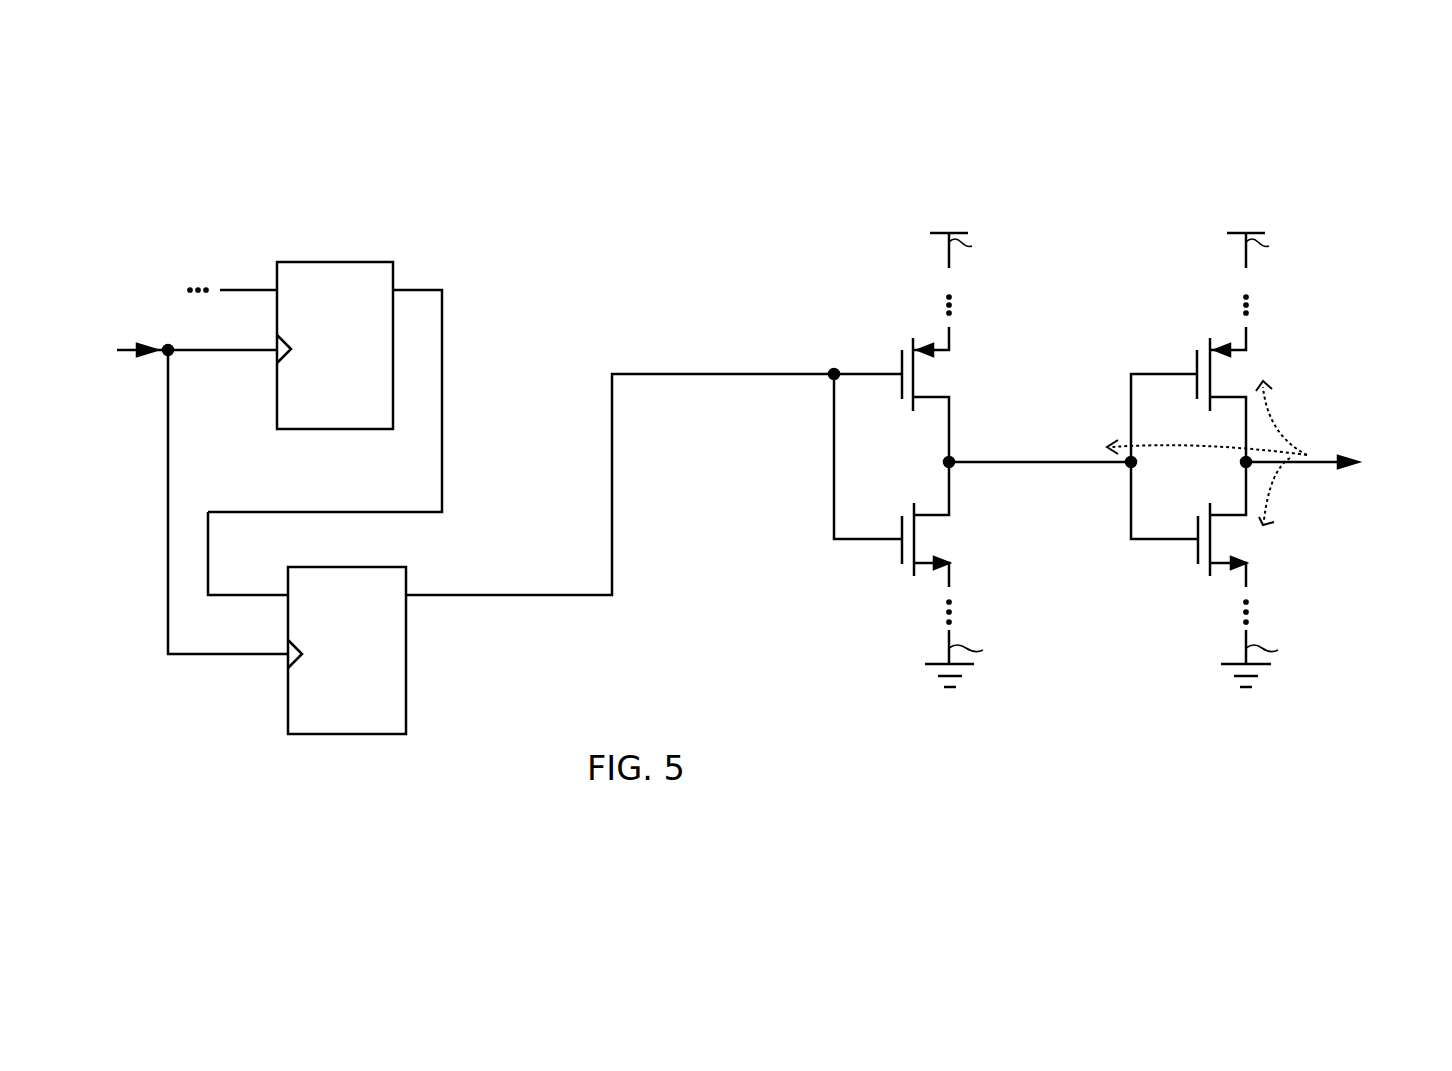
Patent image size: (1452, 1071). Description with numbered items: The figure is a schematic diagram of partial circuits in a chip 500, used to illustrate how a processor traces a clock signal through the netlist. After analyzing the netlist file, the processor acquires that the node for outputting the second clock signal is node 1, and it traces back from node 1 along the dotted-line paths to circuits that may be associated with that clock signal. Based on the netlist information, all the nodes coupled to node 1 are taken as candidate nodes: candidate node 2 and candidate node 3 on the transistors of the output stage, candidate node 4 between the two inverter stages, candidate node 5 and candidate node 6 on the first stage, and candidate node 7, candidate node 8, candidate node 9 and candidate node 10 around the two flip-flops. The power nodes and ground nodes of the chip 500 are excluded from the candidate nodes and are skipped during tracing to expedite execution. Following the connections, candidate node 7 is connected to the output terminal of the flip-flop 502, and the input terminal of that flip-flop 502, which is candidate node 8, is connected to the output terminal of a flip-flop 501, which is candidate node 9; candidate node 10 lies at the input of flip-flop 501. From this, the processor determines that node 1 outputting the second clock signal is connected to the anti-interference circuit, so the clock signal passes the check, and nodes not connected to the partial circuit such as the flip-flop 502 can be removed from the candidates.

The chip 500 is at (690, 160).
The flip-flop 501 is at (333, 262).
The flip-flop 502 is at (406, 658).
The candidate node 10 is at (247, 290).
The candidate node 9 is at (432, 290).
The candidate node 8 is at (247, 595).
The candidate node 7 is at (683, 374).
The candidate node 5 is at (949, 336).
The candidate node 6 is at (949, 578).
The candidate node 4 is at (1030, 462).
The candidate node 2 is at (1246, 336).
The candidate node 3 is at (1246, 578).
The node 1 is at (1325, 462).